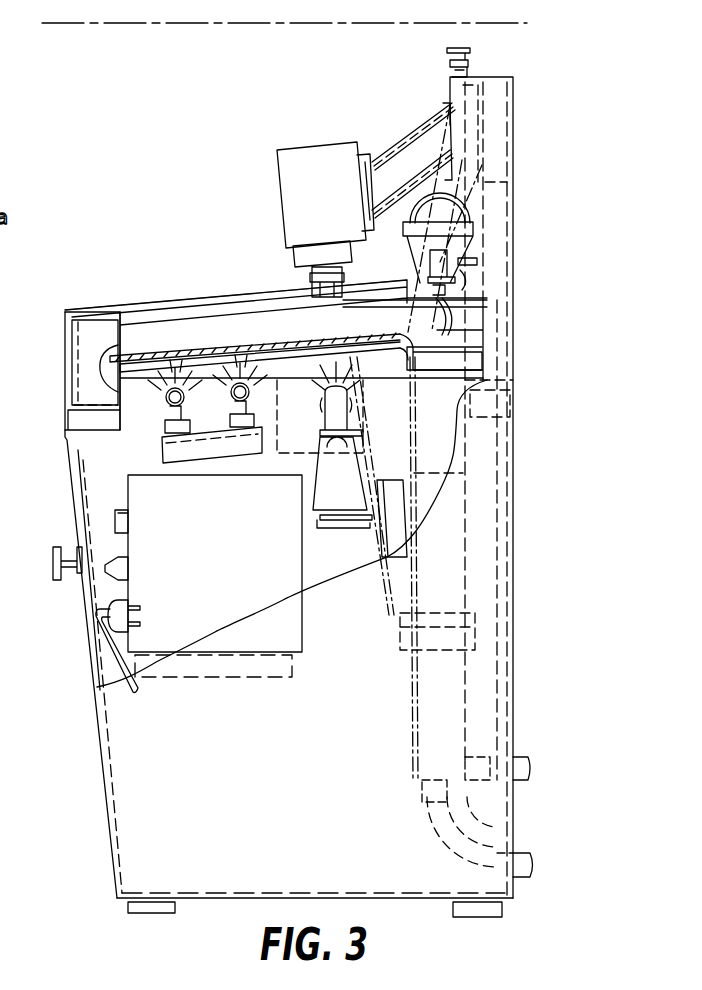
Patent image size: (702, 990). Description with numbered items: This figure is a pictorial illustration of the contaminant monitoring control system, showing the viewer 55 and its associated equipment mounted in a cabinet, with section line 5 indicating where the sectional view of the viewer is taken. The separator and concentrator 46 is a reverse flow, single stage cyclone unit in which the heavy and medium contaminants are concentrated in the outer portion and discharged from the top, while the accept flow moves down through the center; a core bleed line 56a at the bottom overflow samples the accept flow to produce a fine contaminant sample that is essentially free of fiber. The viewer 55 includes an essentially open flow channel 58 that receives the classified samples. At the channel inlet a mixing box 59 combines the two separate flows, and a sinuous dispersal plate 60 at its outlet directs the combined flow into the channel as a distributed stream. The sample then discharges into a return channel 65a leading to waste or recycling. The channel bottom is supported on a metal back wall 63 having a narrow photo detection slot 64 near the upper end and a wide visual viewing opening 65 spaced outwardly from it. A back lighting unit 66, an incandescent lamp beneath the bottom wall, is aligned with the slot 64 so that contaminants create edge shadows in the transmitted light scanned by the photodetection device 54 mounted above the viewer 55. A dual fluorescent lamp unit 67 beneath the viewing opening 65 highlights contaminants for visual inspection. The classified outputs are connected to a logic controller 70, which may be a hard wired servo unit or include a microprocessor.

The section line 5- 5 is at (49, 50).
The separator and concentrator 46 is at (437, 433).
The photodetection device 54 is at (273, 173).
The viewer 55 is at (215, 237).
The core bleed line 56a is at (458, 856).
The open flow channel 58 is at (172, 347).
The mixing box 59 is at (407, 266).
The sinuous dispersal plate 60 is at (438, 327).
The metal back wall 63 is at (282, 372).
The photo detection slot 64 is at (372, 375).
The visual viewing opening 65 is at (212, 378).
The return channel 65a is at (78, 372).
The back lighting unit 66 is at (308, 438).
The dual fluorescent lamp unit 67 is at (222, 447).
The logic controller 70 is at (221, 611).